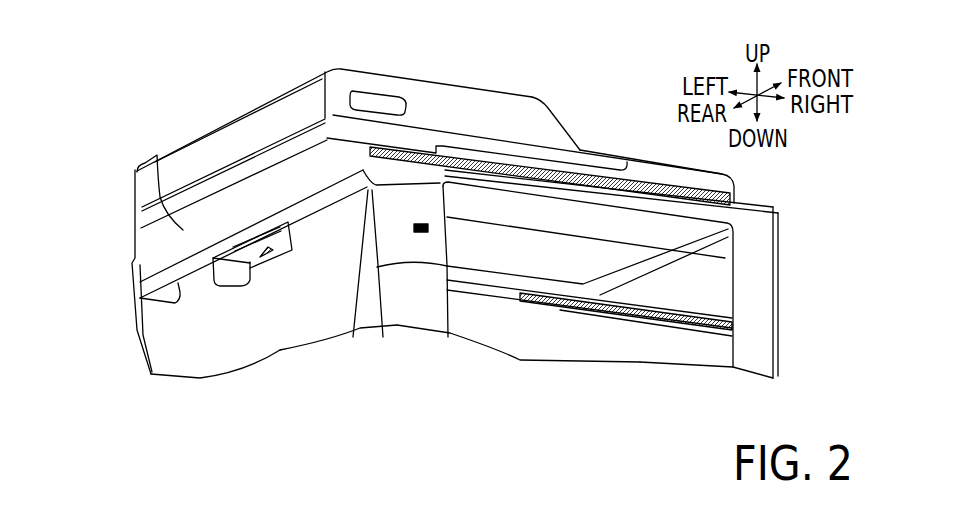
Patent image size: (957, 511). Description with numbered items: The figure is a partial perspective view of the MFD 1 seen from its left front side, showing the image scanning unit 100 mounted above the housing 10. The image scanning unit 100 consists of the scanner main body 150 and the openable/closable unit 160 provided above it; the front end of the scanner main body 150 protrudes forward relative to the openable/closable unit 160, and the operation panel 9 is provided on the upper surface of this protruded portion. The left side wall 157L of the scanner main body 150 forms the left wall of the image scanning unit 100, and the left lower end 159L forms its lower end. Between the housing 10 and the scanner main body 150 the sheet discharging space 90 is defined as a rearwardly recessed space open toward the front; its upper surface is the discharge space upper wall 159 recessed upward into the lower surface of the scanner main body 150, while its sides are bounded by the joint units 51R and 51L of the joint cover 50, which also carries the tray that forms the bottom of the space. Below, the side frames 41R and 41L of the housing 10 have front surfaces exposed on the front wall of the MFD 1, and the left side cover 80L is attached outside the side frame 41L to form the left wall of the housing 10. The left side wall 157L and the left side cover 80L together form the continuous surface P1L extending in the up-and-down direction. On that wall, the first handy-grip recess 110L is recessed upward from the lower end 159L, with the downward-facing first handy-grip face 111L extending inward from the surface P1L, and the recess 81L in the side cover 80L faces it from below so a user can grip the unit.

The MFD 1 is at (596, 81).
The operation panel 9 is at (736, 186).
The housing 10 is at (780, 350).
The image scanning unit 100 is at (250, 109).
The left side wall 157L is at (151, 162).
The openable/closable unit 160 is at (134, 195).
The scanner main body 150 is at (162, 249).
The left lower end 159L is at (137, 299).
The continuous surface P1L is at (207, 325).
The left side cover 80L is at (230, 347).
The first handy-grip recess 110L is at (252, 250).
The first handy-grip face 111L is at (235, 287).
The recess 81L is at (283, 260).
The joint unit 51L is at (358, 317).
The side frame 41L is at (413, 307).
The discharge space upper wall 159 is at (557, 218).
The joint cover 50 is at (761, 255).
The sheet discharging space 90 is at (694, 275).
The joint unit 51R is at (763, 295).
The side frame 41R is at (757, 354).